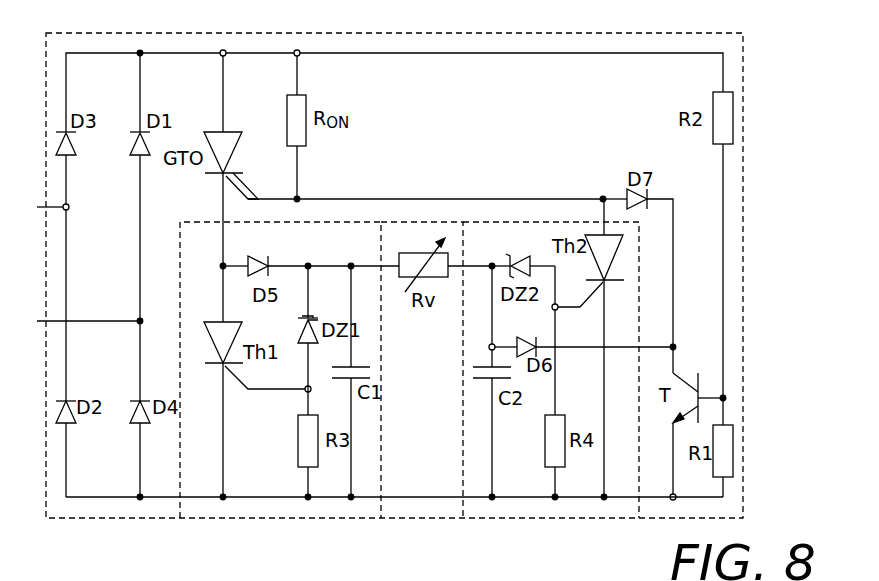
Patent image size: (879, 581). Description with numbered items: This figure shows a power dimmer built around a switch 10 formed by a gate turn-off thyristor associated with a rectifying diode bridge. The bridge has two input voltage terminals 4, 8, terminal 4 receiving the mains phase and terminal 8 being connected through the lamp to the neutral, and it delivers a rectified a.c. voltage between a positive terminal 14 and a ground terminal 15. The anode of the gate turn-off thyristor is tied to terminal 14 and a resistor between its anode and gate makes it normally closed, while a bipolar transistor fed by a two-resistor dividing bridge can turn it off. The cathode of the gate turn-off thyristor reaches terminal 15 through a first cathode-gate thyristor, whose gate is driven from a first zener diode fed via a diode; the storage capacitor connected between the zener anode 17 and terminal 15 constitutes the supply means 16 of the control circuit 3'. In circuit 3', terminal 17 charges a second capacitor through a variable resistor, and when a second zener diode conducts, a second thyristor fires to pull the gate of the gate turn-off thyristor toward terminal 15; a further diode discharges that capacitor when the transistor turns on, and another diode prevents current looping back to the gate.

The positive terminal 14 is at (140, 53).
The input voltage terminal 4 is at (37, 207).
The input voltage terminal 8 is at (37, 321).
The switch 10 is at (470, 123).
The supply means 16 is at (270, 449).
The anode terminal 17 is at (308, 266).
The ground terminal 15 is at (140, 497).
The control circuit 3' is at (551, 370).